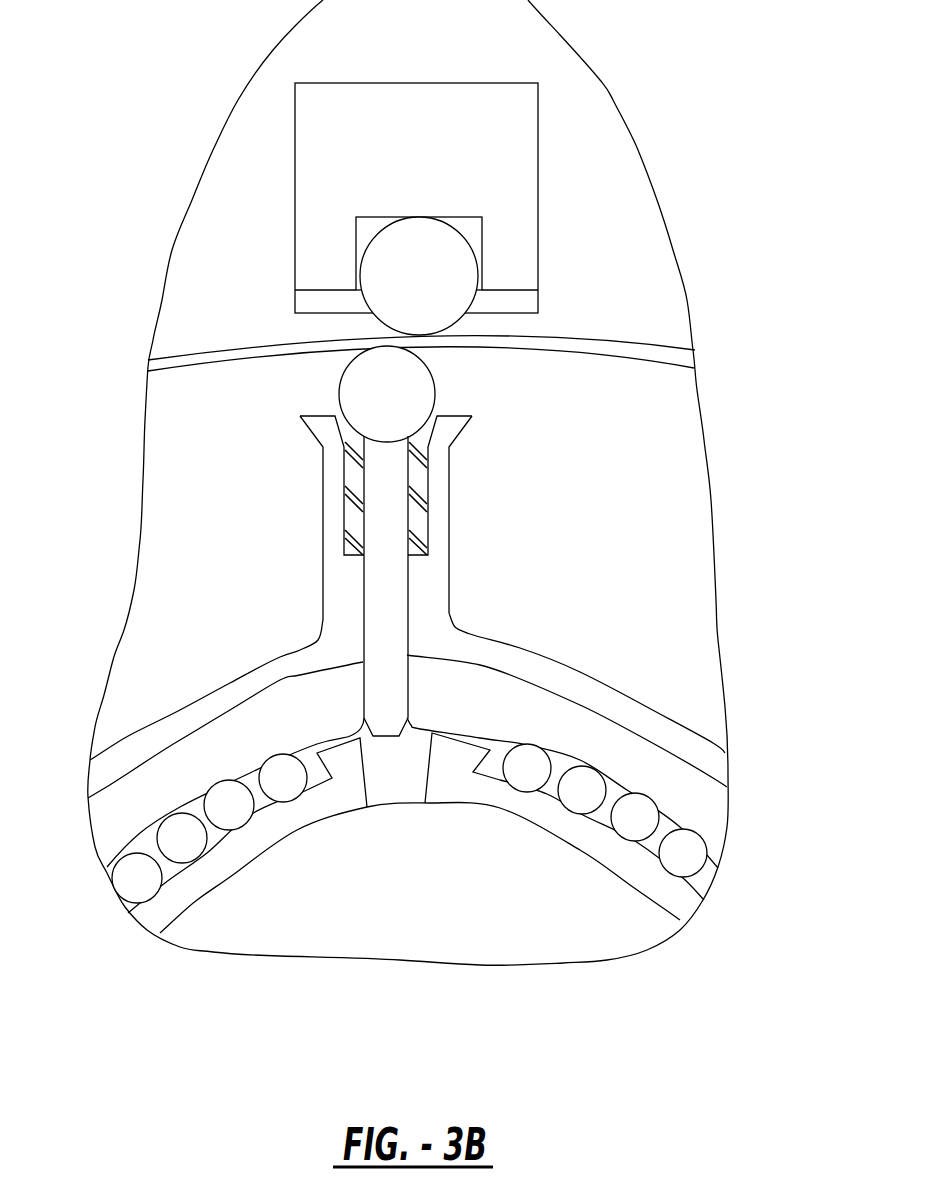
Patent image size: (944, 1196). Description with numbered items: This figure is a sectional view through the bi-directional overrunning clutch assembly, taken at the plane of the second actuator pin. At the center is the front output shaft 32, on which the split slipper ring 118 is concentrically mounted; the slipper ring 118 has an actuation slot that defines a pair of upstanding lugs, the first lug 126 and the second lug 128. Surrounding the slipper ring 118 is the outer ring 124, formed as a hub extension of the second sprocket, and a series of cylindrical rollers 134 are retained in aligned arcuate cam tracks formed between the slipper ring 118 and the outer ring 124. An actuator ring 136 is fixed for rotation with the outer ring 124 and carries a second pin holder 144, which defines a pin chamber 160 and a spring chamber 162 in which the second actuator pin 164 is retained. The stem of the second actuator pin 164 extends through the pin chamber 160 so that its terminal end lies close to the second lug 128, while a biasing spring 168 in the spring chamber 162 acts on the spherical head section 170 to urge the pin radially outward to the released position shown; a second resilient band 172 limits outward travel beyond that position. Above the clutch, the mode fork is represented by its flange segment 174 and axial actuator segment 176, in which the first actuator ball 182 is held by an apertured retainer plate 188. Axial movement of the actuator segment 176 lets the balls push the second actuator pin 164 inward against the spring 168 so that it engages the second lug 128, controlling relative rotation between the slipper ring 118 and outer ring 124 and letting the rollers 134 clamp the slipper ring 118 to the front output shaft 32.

The front output shaft 32 is at (402, 913).
The slipper ring 118 is at (622, 855).
The outer ring 124 is at (672, 790).
The first lug 126 is at (452, 778).
The second lug 128 is at (355, 778).
The rollers 134 is at (177, 838).
The actuator ring 136 is at (581, 688).
The second pin holder 144 is at (428, 580).
The pin chamber 160 is at (405, 612).
The spring chamber 162 is at (424, 486).
The second actuator pin 164 is at (380, 590).
The biasing spring 168 is at (353, 473).
The spherical head section 170 is at (410, 382).
The second resilient band 172 is at (672, 352).
The flange segment 174 is at (476, 180).
The actuator segment 176 is at (370, 97).
The first actuator ball 182 is at (450, 265).
The apertured retainer plate 188 is at (515, 302).